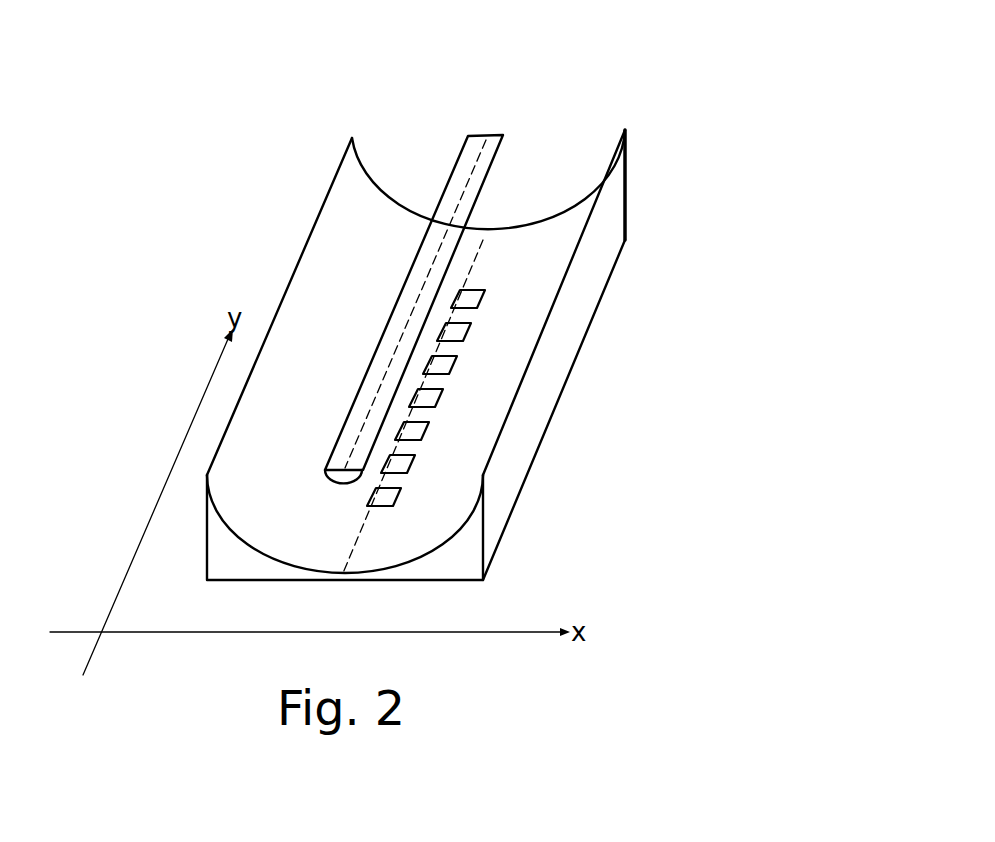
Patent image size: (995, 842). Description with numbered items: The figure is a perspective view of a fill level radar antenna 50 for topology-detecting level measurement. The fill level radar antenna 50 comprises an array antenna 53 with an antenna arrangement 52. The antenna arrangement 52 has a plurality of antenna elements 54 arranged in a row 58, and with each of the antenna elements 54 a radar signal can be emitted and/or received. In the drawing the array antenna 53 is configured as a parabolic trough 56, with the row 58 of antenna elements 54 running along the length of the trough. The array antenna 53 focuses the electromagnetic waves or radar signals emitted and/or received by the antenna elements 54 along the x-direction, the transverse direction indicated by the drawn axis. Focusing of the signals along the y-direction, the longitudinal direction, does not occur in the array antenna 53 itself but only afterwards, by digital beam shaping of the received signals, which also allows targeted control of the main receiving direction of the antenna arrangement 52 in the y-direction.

The fill level radar antenna 50 is at (479, 300).
The antenna arrangement 52 is at (503, 291).
The array antenna 53 is at (628, 195).
The antenna elements 54 is at (483, 300).
The parabolic trough 56 is at (598, 309).
The row 58 is at (483, 243).